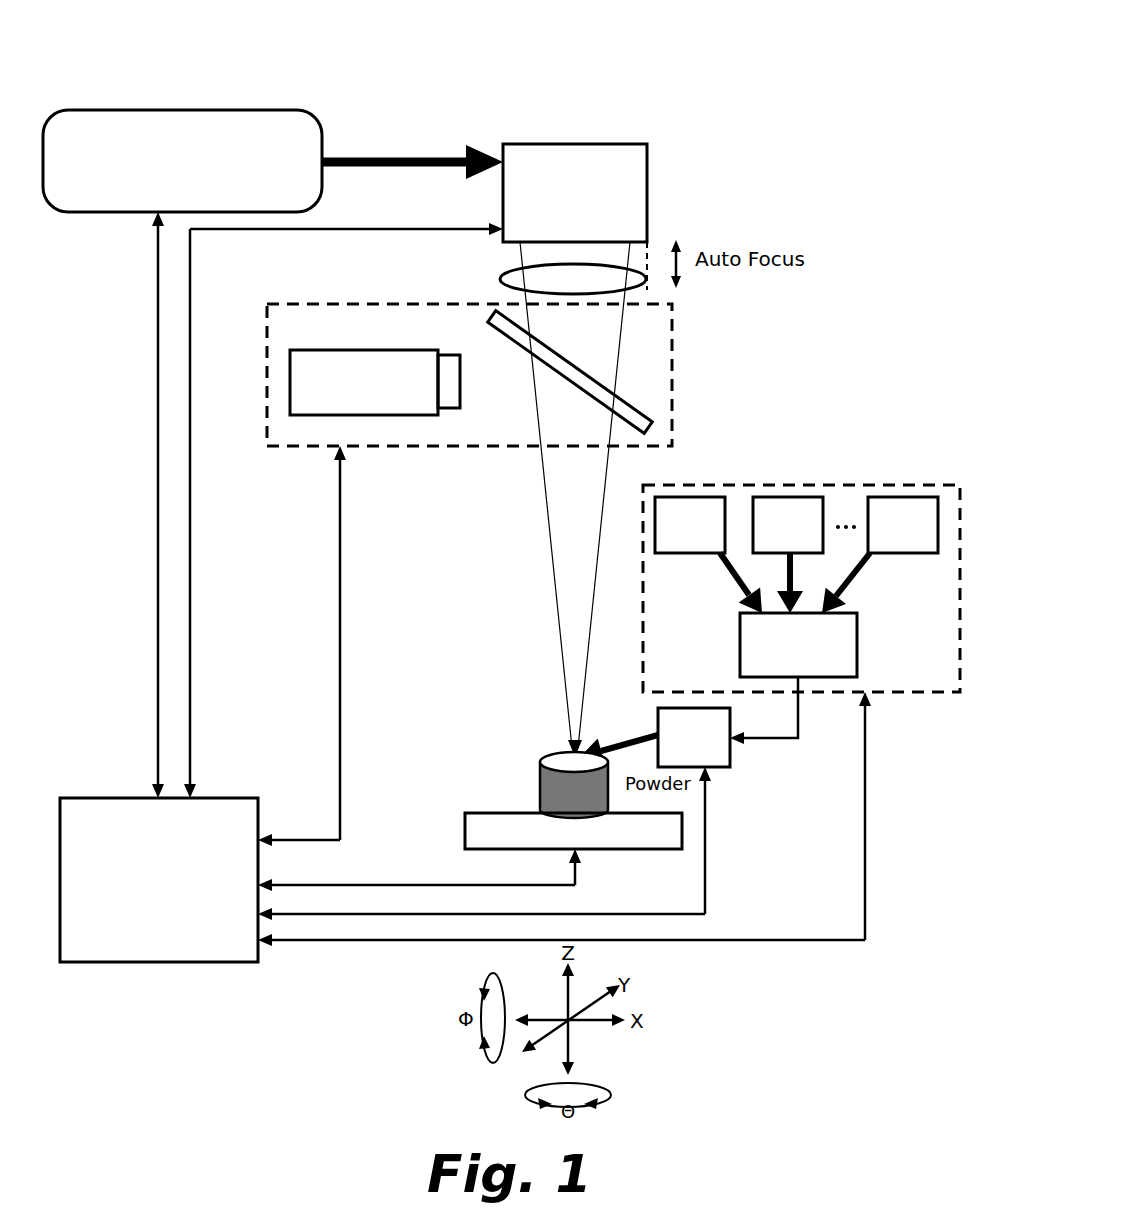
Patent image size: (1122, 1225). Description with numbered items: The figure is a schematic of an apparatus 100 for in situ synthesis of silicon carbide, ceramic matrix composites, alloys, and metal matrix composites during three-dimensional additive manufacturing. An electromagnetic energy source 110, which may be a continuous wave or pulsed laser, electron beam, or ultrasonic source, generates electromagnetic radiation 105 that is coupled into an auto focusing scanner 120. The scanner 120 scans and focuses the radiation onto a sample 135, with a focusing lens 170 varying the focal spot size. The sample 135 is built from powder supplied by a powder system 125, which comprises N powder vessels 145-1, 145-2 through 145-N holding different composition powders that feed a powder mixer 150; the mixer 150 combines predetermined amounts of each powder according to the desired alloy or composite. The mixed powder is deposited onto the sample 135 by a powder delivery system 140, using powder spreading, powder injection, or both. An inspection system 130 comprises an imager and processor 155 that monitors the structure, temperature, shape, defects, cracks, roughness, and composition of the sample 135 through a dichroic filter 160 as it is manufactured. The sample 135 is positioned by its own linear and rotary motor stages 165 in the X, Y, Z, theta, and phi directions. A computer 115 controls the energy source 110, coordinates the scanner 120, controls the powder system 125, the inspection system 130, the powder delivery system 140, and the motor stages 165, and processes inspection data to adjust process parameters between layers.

The apparatus 100 is at (811, 44).
The electromagnetic radiation 105 is at (405, 122).
The electromagnetic energy source 110 is at (190, 176).
The computer 115 is at (138, 887).
The auto focusing scanner 120 is at (596, 208).
The powder system 125 is at (943, 680).
The inspection system 130 is at (318, 337).
The sample 135 is at (533, 769).
The powder delivery system 140 is at (674, 750).
The powder vessel 145-1 is at (662, 538).
The powder vessel 145-2 is at (760, 538).
The powder vessel 145-N is at (875, 538).
The powder mixer 150 is at (778, 658).
The imager and processor 155 is at (383, 392).
The dichroic filter 160 is at (630, 372).
The linear and rotary motor stages 165 is at (522, 844).
The focusing lens 170 is at (533, 269).